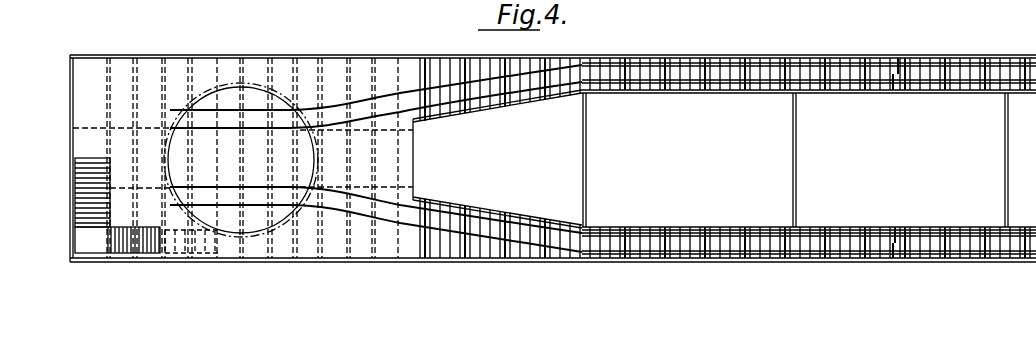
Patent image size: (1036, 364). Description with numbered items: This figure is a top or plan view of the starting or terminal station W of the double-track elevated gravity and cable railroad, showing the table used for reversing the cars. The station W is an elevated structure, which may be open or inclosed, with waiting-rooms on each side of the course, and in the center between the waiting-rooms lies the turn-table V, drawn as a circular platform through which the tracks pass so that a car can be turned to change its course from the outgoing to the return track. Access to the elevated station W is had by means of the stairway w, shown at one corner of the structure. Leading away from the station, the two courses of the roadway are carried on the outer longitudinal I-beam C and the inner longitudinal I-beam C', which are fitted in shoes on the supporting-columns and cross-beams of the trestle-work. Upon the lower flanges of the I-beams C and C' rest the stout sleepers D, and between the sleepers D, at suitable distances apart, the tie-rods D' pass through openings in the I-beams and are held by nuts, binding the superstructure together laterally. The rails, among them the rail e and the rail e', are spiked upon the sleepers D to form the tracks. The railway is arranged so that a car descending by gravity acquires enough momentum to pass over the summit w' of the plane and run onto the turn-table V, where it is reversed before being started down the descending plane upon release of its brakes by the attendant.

The starting or terminal station W is at (356, 102).
The turn-table V is at (241, 160).
The stairway w is at (117, 205).
The outer longitudinal I-beam C is at (725, 158).
The inner longitudinal I-beam C' is at (809, 160).
The summit of the plane w' is at (601, 121).
The sleeper D is at (603, 172).
The tie-rod D' is at (603, 180).
The rail e is at (900, 54).
The rail e' is at (891, 94).